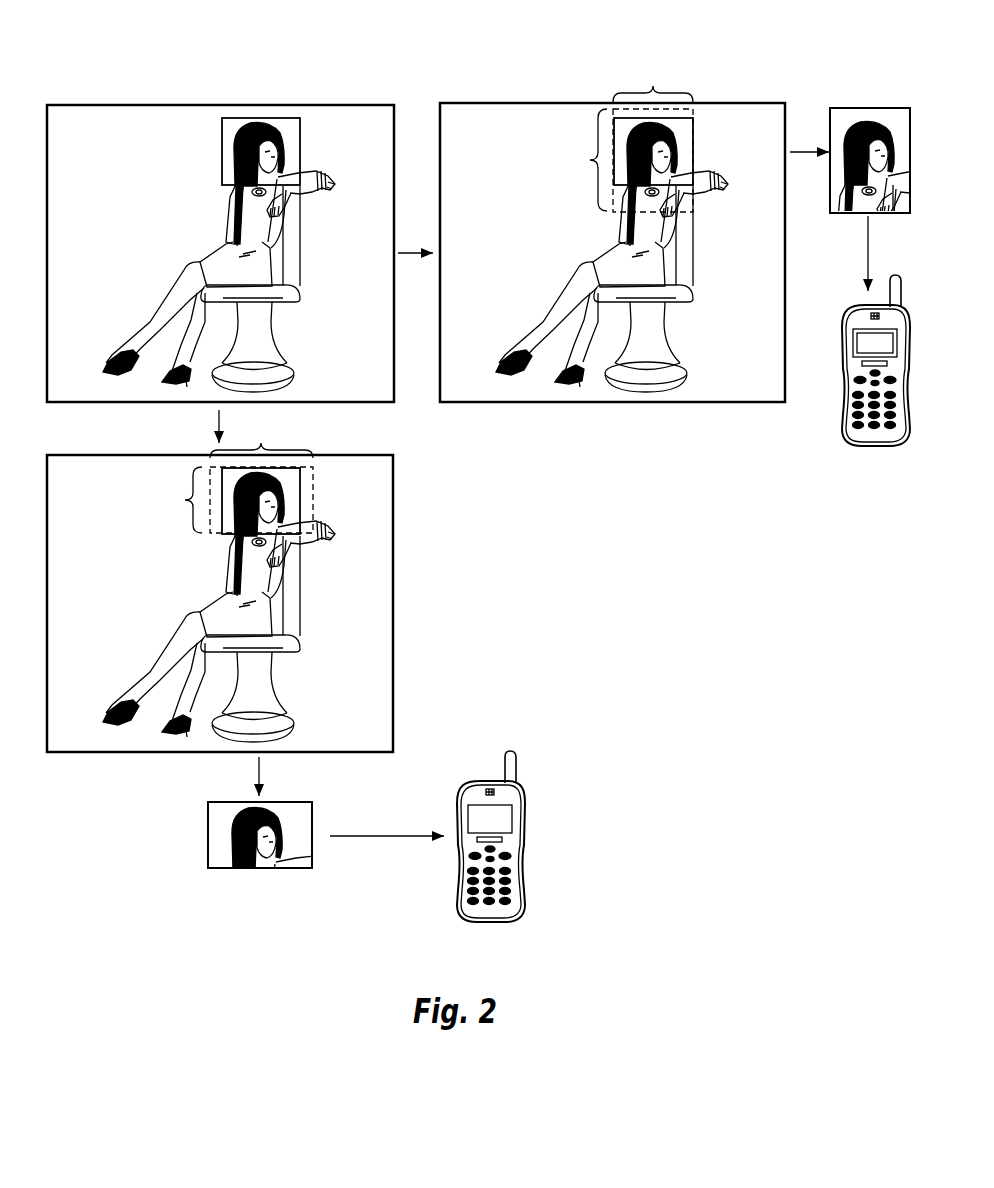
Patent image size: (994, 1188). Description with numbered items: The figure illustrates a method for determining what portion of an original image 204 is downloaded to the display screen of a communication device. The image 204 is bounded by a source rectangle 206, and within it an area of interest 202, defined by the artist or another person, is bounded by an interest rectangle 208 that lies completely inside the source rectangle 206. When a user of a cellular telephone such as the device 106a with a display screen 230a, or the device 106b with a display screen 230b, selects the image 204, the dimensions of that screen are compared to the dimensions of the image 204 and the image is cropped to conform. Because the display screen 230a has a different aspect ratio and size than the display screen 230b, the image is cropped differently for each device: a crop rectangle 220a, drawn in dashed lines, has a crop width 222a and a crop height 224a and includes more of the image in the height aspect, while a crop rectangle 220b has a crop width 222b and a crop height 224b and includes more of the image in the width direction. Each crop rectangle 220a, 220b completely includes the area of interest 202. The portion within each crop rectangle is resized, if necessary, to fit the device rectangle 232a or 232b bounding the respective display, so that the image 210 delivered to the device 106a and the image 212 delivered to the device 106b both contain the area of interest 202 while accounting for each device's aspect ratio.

The area of interest 202 is at (285, 123).
The image 204 is at (170, 137).
The source rectangle 206 is at (88, 104).
The interest rectangle 208 is at (237, 116).
The image 210 is at (868, 107).
The image 212 is at (265, 871).
The crop rectangle 220a is at (688, 212).
The crop rectangle 220b is at (313, 498).
The crop width 222a is at (653, 79).
The crop width 222b is at (261, 436).
The crop height 224a is at (574, 160).
The crop height 224b is at (169, 500).
The device 106a is at (875, 446).
The device 106b is at (525, 803).
The display screen 230a is at (867, 348).
The display screen 230b is at (505, 817).
The device rectangle 232a is at (857, 380).
The device rectangle 232b is at (507, 837).